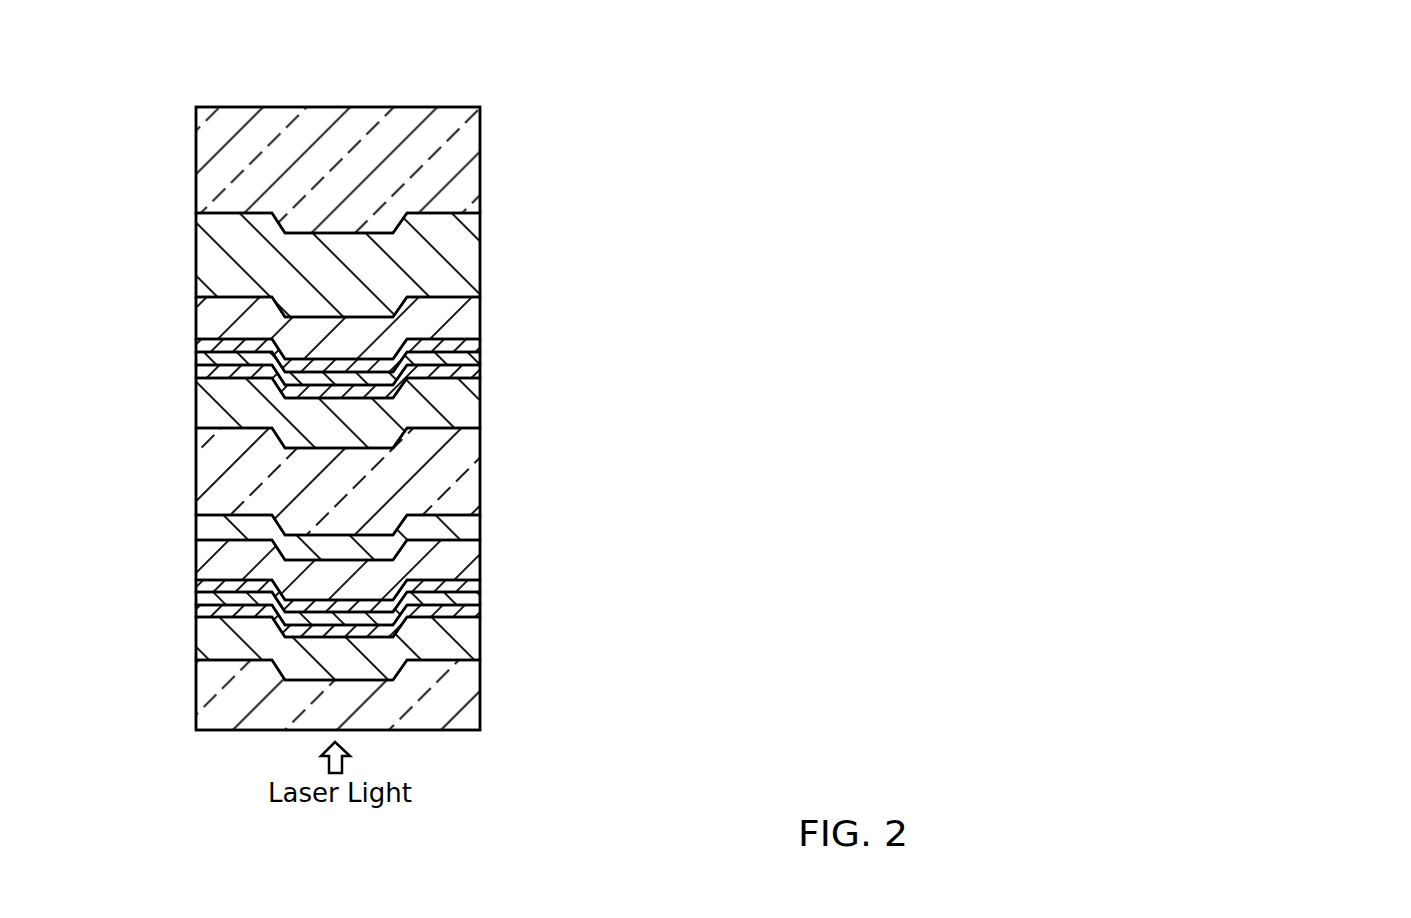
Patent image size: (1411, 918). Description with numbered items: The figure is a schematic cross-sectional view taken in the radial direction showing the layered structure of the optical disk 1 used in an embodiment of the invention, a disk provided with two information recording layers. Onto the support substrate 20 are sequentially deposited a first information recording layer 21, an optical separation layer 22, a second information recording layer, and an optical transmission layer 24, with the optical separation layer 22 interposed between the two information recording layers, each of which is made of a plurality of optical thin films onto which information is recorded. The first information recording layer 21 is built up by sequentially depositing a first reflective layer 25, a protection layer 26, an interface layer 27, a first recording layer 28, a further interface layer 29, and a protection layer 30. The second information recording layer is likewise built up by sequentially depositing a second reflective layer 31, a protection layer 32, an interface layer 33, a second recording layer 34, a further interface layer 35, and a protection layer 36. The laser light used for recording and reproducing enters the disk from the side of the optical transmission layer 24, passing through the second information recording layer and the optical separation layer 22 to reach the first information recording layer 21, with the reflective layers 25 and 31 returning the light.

The optical disk 1 is at (572, 94).
The support substrate 20 is at (465, 187).
The first information recording layer 21 is at (798, 448).
The optical separation layer 22 is at (465, 468).
The optical transmission layer 24 is at (465, 693).
The first reflective layer 25 is at (465, 265).
The protection layer 26 is at (465, 324).
The interface layer 27 is at (465, 345).
The first recording layer 28 is at (465, 370).
The interface layer 29 is at (465, 385).
The protection layer 30 is at (465, 408).
The second reflective layer 31 is at (465, 527).
The protection layer 32 is at (465, 557).
The interface layer 33 is at (465, 588).
The second recording layer 34 is at (465, 600).
The interface layer 35 is at (465, 612).
The protection layer 36 is at (465, 633).